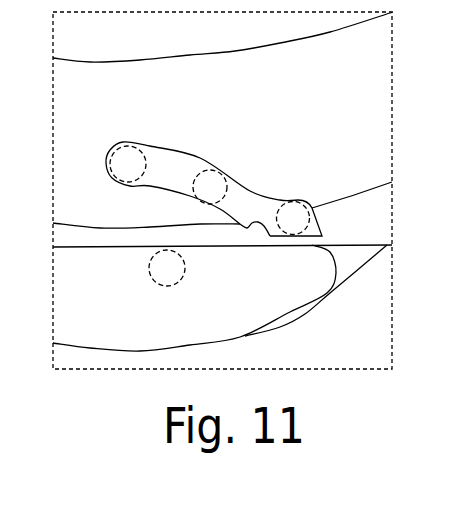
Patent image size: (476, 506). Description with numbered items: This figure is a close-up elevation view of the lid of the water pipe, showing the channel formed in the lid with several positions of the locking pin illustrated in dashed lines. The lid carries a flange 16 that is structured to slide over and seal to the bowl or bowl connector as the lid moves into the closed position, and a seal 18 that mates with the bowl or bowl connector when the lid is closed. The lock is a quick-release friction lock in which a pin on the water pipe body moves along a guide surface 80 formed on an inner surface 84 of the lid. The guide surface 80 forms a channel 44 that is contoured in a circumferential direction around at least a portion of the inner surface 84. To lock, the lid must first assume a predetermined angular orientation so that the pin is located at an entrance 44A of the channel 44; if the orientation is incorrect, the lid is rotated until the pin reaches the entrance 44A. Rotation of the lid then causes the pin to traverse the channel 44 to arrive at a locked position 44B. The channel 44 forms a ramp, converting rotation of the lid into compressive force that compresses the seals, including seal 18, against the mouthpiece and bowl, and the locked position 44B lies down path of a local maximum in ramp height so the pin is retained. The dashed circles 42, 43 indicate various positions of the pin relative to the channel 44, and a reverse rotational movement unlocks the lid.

The flange 16 is at (382, 215).
The seal 18 is at (247, 325).
The magnet 42 is at (121, 124).
The magnet 43 is at (141, 272).
The channel 44 is at (236, 226).
The entrance 44A is at (312, 207).
The locked position 44B is at (105, 166).
The guide surface 80 is at (246, 229).
The inner surface 84 is at (191, 142).